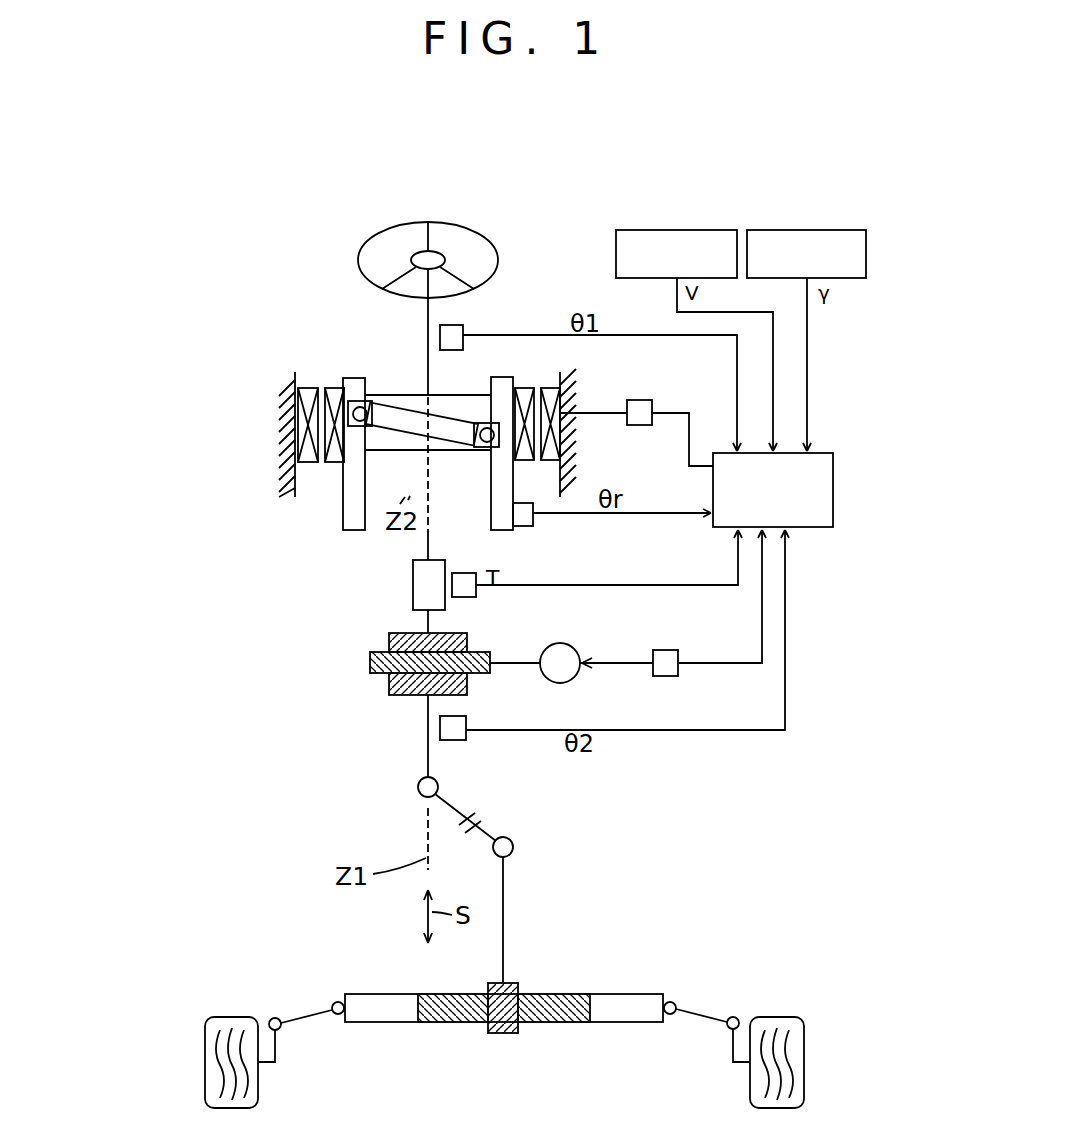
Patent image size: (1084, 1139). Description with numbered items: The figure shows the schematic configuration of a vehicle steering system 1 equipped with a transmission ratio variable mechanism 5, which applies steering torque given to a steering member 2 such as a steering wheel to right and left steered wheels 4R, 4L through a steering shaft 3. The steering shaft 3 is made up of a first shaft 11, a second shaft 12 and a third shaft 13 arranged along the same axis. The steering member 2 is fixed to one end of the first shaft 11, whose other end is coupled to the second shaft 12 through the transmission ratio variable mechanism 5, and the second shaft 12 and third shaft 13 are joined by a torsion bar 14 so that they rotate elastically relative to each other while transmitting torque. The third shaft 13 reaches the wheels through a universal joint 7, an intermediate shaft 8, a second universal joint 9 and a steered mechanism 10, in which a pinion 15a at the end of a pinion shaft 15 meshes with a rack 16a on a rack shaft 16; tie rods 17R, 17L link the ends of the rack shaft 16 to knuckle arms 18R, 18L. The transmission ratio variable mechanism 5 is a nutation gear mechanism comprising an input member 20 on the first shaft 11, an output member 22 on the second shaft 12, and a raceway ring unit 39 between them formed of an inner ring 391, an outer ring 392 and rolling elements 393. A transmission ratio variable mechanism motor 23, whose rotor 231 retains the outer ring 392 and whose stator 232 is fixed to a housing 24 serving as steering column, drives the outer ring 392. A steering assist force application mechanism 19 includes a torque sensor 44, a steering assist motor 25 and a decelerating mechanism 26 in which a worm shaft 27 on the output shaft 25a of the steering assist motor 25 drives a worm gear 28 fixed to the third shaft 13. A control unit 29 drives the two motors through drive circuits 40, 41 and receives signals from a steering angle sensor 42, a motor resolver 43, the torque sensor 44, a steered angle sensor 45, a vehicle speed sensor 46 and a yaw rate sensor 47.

The vehicle steering system 1 is at (548, 250).
The steering member 2 is at (482, 230).
The steering shaft 3 is at (426, 312).
The transmission ratio variable mechanism 5 is at (418, 421).
The universal joint 7 is at (417, 792).
The intermediate shaft 8 is at (495, 828).
The universal joint 9 is at (513, 852).
The steered mechanism 10 is at (527, 983).
The first shaft 11 is at (427, 330).
The second shaft 12 is at (426, 549).
The third shaft 13 is at (430, 620).
The torsion bar 14 is at (412, 584).
The pinion shaft 15 is at (501, 1029).
The pinion 15a is at (518, 1035).
The rack shaft 16 is at (504, 1002).
The rack 16a is at (472, 1024).
The tie rod 17L is at (308, 1012).
The tie rod 17R is at (702, 1012).
The knuckle arm 18L is at (280, 1046).
The knuckle arm 18R is at (727, 1045).
The steered wheel 4L is at (232, 1016).
The steered wheel 4R is at (772, 1016).
The steering assist force application mechanism 19 is at (439, 670).
The input member 20 is at (463, 394).
The output member 22 is at (449, 452).
The transmission ratio variable mechanism motor 23 is at (373, 448).
The rotor 231 is at (333, 465).
The stator 232 is at (294, 478).
The housing 24 is at (300, 378).
The steering assist motor 25 is at (582, 673).
The output shaft 25a is at (510, 665).
The decelerating mechanism 26 is at (405, 740).
The worm shaft 27 is at (378, 675).
The worm gear 28 is at (402, 695).
The control unit 29 is at (805, 530).
The raceway ring unit 39 is at (365, 417).
The inner ring 391 is at (290, 440).
The outer ring 392 is at (294, 394).
The rolling elements 393 is at (296, 416).
The drive circuit 40 is at (640, 400).
The drive circuit 41 is at (665, 650).
The steering angle sensor 42 is at (452, 325).
The motor resolver 43 is at (521, 527).
The torque sensor 44 is at (465, 571).
The steered angle sensor 45 is at (466, 738).
The vehicle speed sensor 46 is at (690, 230).
The yaw rate sensor 47 is at (820, 230).